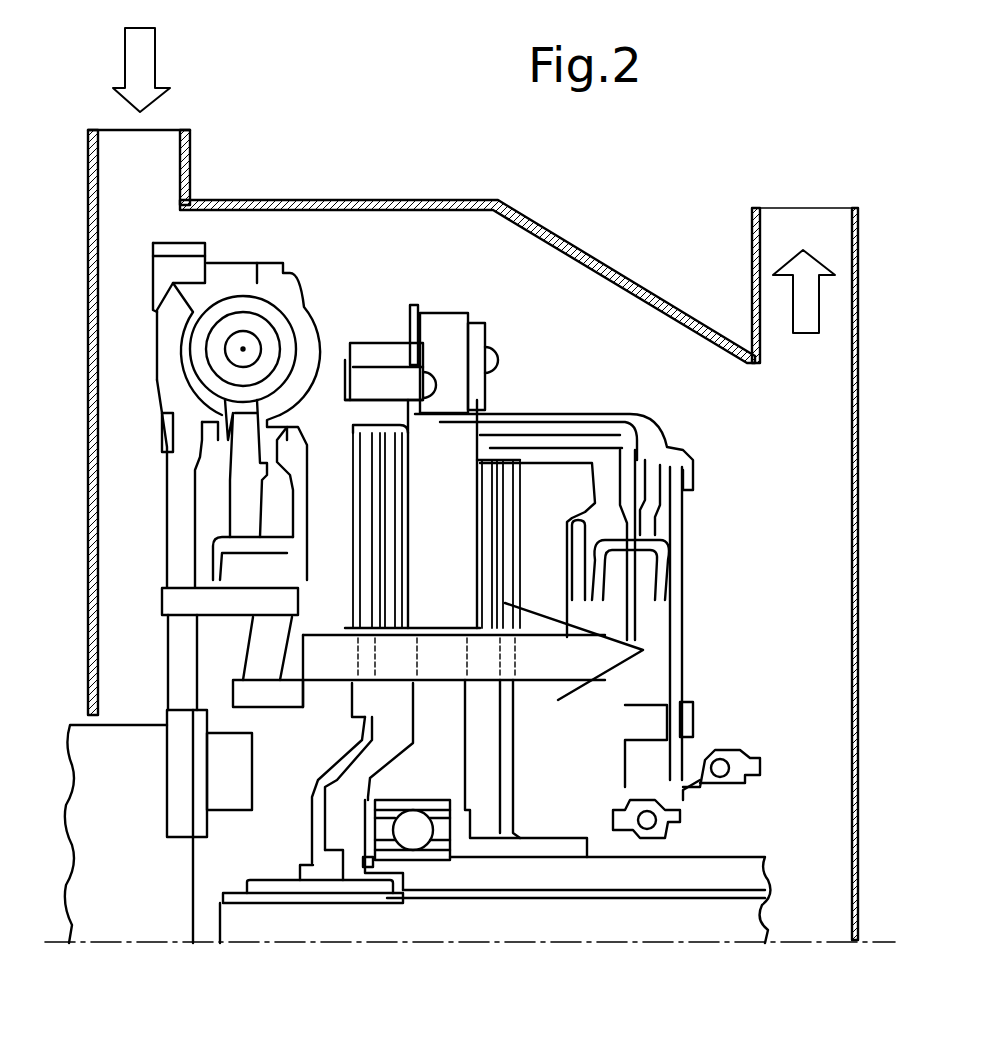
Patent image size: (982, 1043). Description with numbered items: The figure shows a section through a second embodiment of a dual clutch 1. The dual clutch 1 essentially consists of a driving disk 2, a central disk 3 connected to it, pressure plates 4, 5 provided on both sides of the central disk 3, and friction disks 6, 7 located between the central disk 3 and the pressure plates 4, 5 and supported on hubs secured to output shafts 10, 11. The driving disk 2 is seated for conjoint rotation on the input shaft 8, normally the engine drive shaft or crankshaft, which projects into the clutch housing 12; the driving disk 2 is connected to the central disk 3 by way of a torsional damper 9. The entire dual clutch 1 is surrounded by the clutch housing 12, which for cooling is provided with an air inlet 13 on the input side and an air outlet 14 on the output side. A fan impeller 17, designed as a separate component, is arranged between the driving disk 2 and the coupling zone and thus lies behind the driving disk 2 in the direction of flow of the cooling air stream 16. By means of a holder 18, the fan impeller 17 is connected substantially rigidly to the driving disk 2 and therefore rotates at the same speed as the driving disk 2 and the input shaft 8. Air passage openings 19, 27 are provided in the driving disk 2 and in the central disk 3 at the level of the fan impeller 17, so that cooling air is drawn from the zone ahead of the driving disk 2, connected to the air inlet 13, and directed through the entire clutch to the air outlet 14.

The dual clutch 1 is at (530, 392).
The driving disk 2 is at (175, 498).
The central disk 3 is at (496, 597).
The pressure plate 4 is at (400, 526).
The pressure plate 5 is at (549, 536).
The friction disk 6 is at (357, 575).
The friction disk 7 is at (643, 650).
The input shaft 8 is at (135, 905).
The torsional damper 9 is at (222, 307).
The output shaft 10 is at (342, 918).
The output shaft 11 is at (548, 905).
The clutch housing 12 is at (586, 250).
The air inlet 13 is at (150, 155).
The air outlet 14 is at (800, 232).
The cooling air stream 16 is at (580, 640).
The fan impeller 17 is at (260, 640).
The holder 18 is at (203, 598).
The air passage openings 19 is at (180, 670).
The air passage openings 27 is at (427, 670).